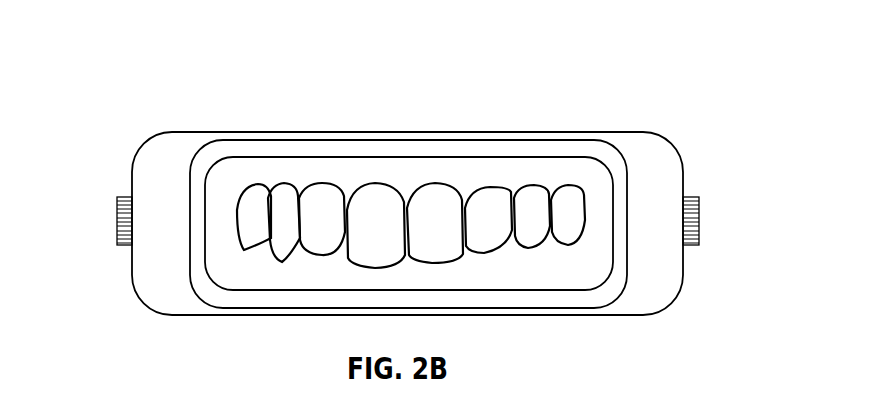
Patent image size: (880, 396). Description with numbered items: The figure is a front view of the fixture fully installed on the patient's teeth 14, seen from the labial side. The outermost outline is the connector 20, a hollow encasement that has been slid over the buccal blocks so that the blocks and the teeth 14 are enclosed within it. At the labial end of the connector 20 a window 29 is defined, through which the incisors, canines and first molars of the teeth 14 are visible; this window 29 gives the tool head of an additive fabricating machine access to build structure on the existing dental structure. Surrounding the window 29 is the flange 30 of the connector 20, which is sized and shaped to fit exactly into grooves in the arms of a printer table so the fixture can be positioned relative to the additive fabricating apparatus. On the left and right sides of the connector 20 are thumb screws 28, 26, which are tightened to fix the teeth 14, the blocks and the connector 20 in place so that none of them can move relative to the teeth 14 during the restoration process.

The connector 20 is at (223, 104).
The teeth 14 is at (378, 204).
The window 29 is at (486, 156).
The flange 30 is at (601, 151).
The thumb screw 28 is at (117, 220).
The thumb screw 26 is at (699, 221).